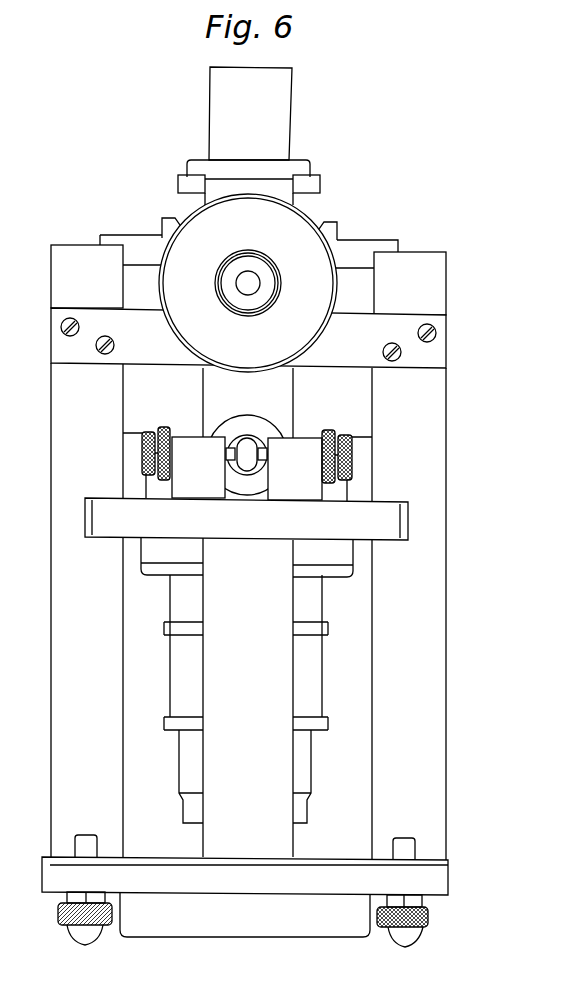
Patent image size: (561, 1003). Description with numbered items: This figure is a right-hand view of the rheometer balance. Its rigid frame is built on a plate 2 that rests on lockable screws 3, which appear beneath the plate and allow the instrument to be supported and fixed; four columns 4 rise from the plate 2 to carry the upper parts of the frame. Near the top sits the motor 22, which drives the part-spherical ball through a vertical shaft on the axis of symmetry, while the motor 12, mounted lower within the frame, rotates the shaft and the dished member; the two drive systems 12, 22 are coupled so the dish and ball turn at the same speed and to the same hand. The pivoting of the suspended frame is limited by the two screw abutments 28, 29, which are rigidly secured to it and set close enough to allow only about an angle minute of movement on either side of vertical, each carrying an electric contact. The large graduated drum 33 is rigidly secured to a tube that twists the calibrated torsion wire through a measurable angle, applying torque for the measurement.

The plate 2 is at (245, 897).
The lockable screws 3 is at (407, 938).
The columns 4 is at (248, 539).
The motor 12 is at (322, 653).
The motor 22 is at (249, 136).
The screw abutment 28 is at (226, 454).
The screw abutment 29 is at (268, 456).
The graduated drum 33 is at (292, 223).